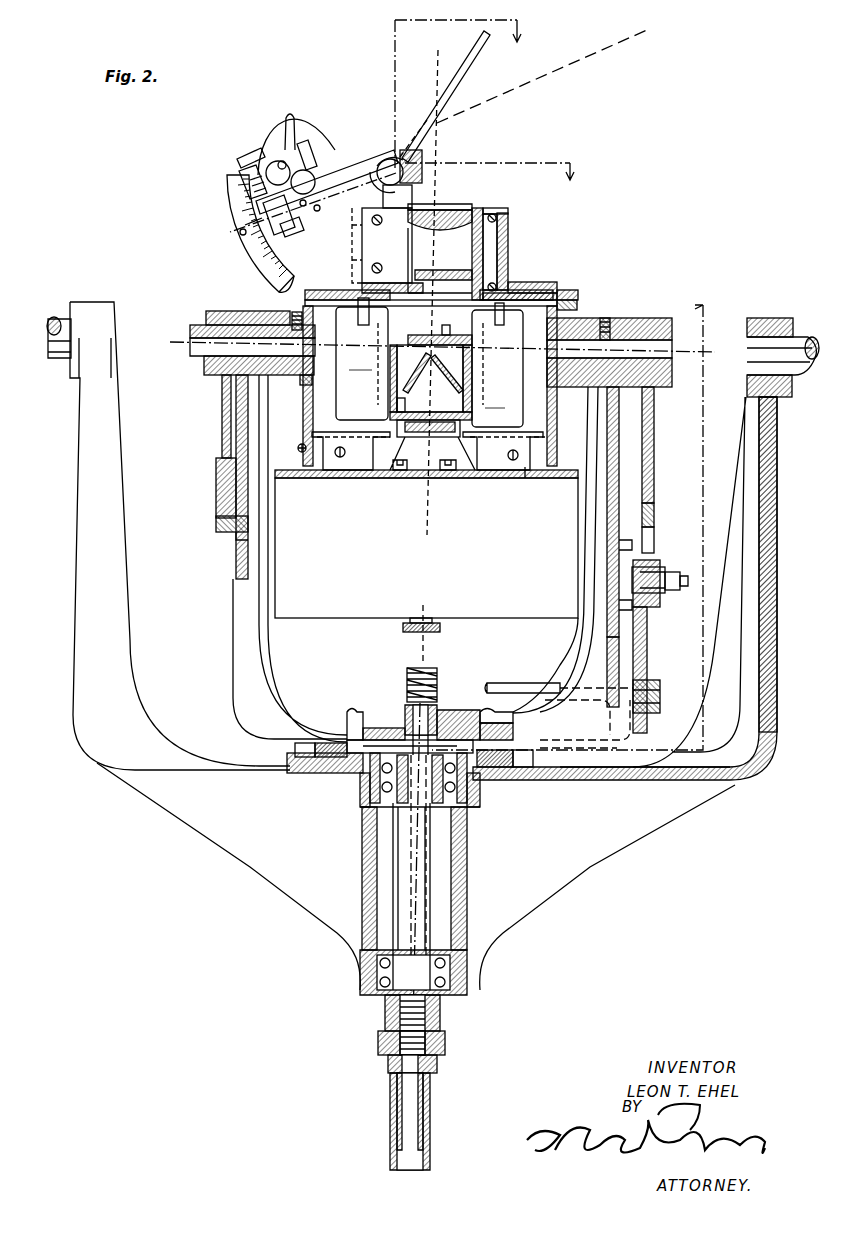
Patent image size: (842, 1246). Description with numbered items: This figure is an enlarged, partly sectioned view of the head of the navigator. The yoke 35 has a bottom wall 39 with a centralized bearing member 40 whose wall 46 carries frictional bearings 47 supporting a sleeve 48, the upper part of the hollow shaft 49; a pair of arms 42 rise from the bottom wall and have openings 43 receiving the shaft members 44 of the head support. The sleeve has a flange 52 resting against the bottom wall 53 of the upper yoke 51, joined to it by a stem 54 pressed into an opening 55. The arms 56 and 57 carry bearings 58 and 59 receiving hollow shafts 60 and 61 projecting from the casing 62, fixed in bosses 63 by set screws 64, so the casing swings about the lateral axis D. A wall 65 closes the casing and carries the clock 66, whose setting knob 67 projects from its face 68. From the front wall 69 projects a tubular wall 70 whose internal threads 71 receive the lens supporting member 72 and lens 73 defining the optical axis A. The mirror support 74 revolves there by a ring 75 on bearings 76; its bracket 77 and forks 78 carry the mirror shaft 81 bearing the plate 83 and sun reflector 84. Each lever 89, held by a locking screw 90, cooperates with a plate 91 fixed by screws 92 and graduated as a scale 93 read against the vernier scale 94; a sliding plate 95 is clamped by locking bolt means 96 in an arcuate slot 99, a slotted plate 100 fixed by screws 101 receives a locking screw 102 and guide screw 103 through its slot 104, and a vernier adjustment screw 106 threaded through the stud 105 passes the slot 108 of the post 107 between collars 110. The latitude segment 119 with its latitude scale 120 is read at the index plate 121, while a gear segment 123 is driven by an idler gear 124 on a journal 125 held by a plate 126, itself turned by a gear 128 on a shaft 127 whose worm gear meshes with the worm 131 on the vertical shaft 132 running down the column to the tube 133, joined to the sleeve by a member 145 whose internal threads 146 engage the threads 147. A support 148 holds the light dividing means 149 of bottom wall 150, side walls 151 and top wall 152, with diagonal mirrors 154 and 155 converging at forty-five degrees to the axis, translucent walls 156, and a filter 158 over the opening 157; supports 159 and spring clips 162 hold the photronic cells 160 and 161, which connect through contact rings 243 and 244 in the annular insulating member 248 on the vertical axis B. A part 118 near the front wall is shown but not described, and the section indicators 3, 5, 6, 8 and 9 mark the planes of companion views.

The section line 3- 3 is at (410, 851).
The section line 5- 5 is at (212, 223).
The section line 6- 6 is at (226, 250).
The section line 8- 8 is at (428, 234).
The section line 9- 9 is at (565, 432).
The optical axis A is at (428, 291).
The axis B is at (415, 889).
The axis D is at (441, 348).
The yoke 35 is at (769, 668).
The bottom wall 39 is at (612, 781).
The bearing member 40 is at (476, 866).
The arms 42 is at (88, 440).
The openings 43 is at (770, 318).
The shaft members 44 is at (55, 320).
The wall 46 is at (362, 852).
The frictional bearings 47 is at (470, 970).
The sleeve 48 is at (426, 906).
The hollow shaft 49 is at (440, 1099).
The yoke 51 is at (240, 650).
The flange 52 is at (366, 760).
The bottom wall 53 is at (350, 712).
The stem 54 is at (445, 708).
The opening 55 is at (451, 715).
The arm 56 is at (240, 592).
The arm 57 is at (620, 485).
The bearing 58 is at (250, 320).
The bearing 59 is at (638, 318).
The hollow shaft 60 is at (196, 350).
The hollow shaft 61 is at (672, 358).
The casing 62 is at (312, 405).
The bosses 63 is at (609, 305).
The set screws 64 is at (296, 312).
The wall 65 is at (527, 480).
The clock 66 is at (517, 577).
The setting knob 67 is at (406, 630).
The face 68 is at (500, 624).
The front wall 69 is at (541, 295).
The tubular wall 70 is at (509, 255).
The internal threads 71 is at (506, 226).
The lens supporting member 72 is at (512, 285).
The lens 73 is at (456, 212).
The mirror support 74 is at (372, 140).
The ring 75 is at (506, 246).
The bearings 76 is at (490, 210).
The bracket 77 is at (352, 248).
The forks 78 is at (400, 200).
The mirror shaft 81 is at (390, 158).
The mirror supporting plate 83 is at (438, 92).
The sun reflector 84 is at (482, 60).
The lever 89 is at (338, 170).
The locking screw 90 is at (405, 150).
The plate 91 is at (275, 286).
The screws 92 is at (382, 268).
The scale 93 is at (235, 205).
The vernier scale 94 is at (262, 258).
The plate 95 is at (272, 162).
The locking bolt means 96 is at (283, 121).
The arcuate slot 99 is at (292, 115).
The slotted plate 100 is at (312, 172).
The screws 101 is at (310, 210).
The locking screw 102 is at (319, 206).
The guide screw 103 is at (313, 150).
The slot 104 is at (296, 150).
The stud 105 is at (245, 172).
The vernier adjustment screw 106 is at (240, 158).
The post 107 is at (293, 228).
The slot 108 is at (245, 232).
The collars 110 is at (251, 185).
The ring 118 is at (562, 292).
The latitude segment 119 is at (221, 400).
The latitude scale 120 is at (217, 478).
The index plate 121 is at (225, 512).
The gear segment 123 is at (655, 448).
The idler gear 124 is at (655, 524).
The journal 125 is at (656, 572).
The plate 126 is at (655, 545).
The shaft 127 is at (527, 687).
The gear 128 is at (660, 700).
The worm 131 is at (440, 684).
The vertical shaft 132 is at (406, 704).
The tube 133 is at (397, 1098).
The member 145 is at (446, 1040).
The internal threads 146 is at (378, 1045).
The threads 147 is at (396, 1020).
The support 148 is at (396, 466).
The light dividing means 149 is at (468, 355).
The bottom wall 150 is at (442, 412).
The side walls 151 is at (397, 398).
The top wall 152 is at (484, 332).
The diagonal mirror 154 is at (424, 370).
The diagonal mirror 155 is at (466, 380).
The translucent walls 156 is at (392, 372).
The opening 157 is at (447, 332).
The filter 158 is at (425, 335).
The supports 159 is at (338, 458).
The photronic cell 160 is at (353, 380).
The photronic cell 161 is at (498, 407).
The spring clips 162 is at (362, 359).
The contact ring 243 is at (340, 742).
The contact ring 244 is at (306, 743).
The annular insulating member 248 is at (306, 771).